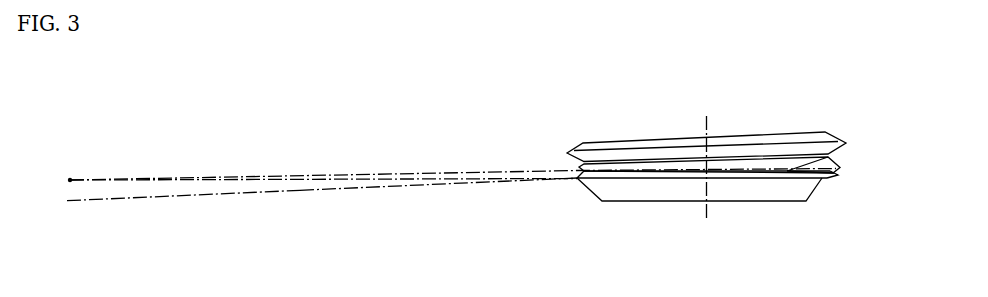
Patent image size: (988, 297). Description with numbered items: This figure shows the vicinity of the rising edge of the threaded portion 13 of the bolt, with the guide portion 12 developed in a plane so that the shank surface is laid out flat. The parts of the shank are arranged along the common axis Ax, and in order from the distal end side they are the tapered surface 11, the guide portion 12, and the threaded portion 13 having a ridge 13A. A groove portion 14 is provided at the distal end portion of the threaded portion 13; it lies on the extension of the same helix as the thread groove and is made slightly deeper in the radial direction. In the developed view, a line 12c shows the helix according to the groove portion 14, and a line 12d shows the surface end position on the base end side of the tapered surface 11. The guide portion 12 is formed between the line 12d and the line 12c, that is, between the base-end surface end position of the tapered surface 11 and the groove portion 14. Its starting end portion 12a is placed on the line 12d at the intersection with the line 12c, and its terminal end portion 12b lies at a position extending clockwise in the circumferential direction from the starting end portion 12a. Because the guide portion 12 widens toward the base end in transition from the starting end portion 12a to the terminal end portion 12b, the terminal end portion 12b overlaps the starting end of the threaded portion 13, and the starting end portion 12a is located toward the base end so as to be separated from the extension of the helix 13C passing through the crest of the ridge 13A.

The tapered surface 11 is at (675, 196).
The guide portion 12 is at (577, 179).
The starting end portion 12a is at (70, 180).
The terminal end portion 12b is at (807, 182).
The line 12c is at (507, 171).
The line 12d is at (340, 191).
The threaded portion 13 is at (584, 142).
The ridge 13A is at (830, 179).
The helix 13C is at (223, 196).
The groove portion 14 is at (835, 159).
The axis Ax is at (706, 152).